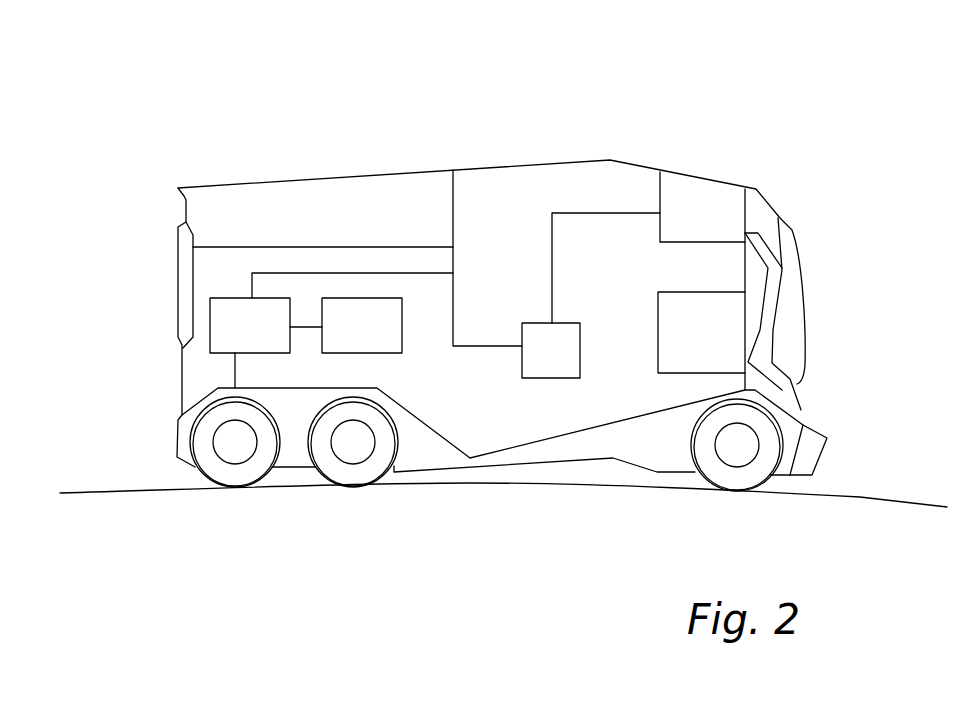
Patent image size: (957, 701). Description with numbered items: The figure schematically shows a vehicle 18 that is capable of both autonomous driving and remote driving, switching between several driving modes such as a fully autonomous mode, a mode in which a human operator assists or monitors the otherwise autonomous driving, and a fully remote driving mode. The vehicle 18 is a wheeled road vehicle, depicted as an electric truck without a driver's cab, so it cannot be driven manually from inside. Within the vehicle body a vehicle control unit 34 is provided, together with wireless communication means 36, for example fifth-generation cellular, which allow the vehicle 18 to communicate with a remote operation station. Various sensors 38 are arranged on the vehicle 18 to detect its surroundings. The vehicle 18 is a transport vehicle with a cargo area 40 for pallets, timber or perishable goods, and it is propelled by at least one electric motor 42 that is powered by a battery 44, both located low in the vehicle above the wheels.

The vehicle 18 is at (546, 151).
The vehicle control unit 34 is at (572, 378).
The wireless communication means 36 is at (697, 190).
The sensors 38 is at (702, 358).
The cargo area 40 is at (283, 200).
The electric motor 42 is at (230, 340).
The battery 44 is at (380, 337).